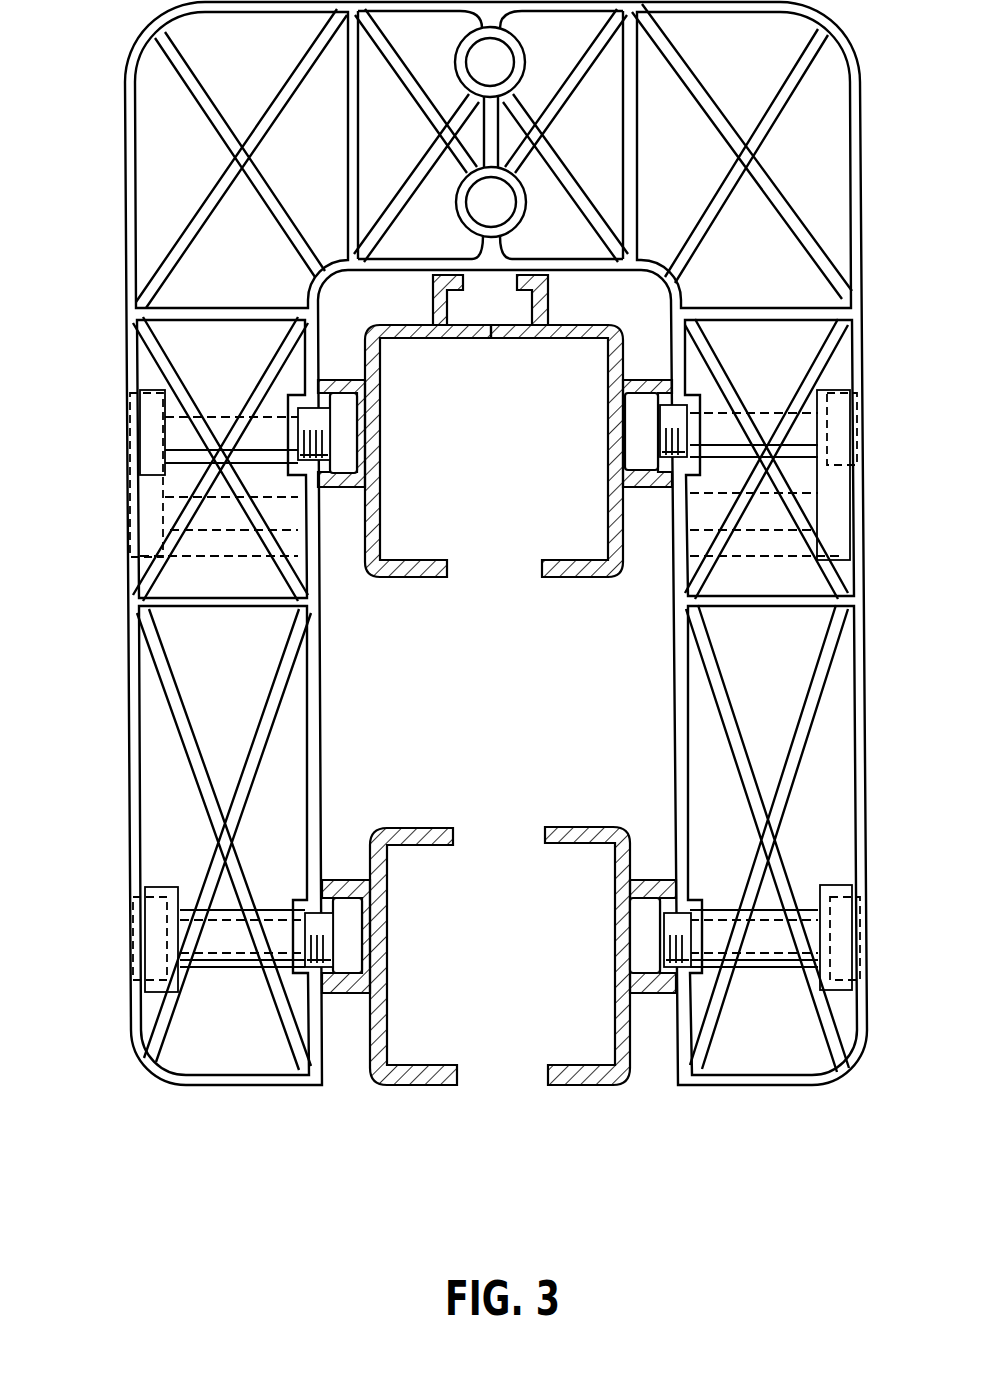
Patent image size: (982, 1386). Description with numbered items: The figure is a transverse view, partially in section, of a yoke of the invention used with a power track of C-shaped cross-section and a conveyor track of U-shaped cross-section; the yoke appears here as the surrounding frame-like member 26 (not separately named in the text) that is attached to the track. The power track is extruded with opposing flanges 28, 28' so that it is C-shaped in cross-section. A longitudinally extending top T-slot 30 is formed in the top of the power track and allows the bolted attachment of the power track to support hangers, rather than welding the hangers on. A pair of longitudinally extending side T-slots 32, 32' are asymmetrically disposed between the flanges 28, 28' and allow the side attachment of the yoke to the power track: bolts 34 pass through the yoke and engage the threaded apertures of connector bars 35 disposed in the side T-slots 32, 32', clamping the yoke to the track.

The frame member 26 is at (125, 285).
The flange 28 is at (428, 705).
The flange 28' is at (560, 705).
The top T-slot 30 is at (512, 303).
The side T-slot 32 is at (380, 686).
The side T-slot 32' is at (605, 686).
The bolt 34 is at (147, 435).
The connector bar 35 is at (345, 462).